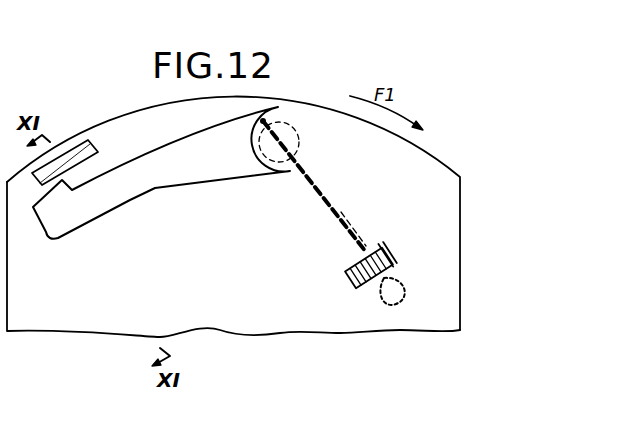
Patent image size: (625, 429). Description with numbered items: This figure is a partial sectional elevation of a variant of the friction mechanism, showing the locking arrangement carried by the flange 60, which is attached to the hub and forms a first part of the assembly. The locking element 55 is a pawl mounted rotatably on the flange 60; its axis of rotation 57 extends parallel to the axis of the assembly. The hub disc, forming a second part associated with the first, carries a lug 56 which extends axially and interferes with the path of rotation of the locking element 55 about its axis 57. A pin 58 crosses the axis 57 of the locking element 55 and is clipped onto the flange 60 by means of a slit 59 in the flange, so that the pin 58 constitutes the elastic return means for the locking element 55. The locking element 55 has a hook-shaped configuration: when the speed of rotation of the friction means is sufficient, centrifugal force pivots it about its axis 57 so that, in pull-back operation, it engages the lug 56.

The locking element 55 is at (150, 203).
The lug 56 is at (78, 155).
The axis of rotation 57 is at (278, 163).
The pin 58 is at (328, 200).
The slit 59 is at (356, 291).
The flange 60 is at (237, 297).